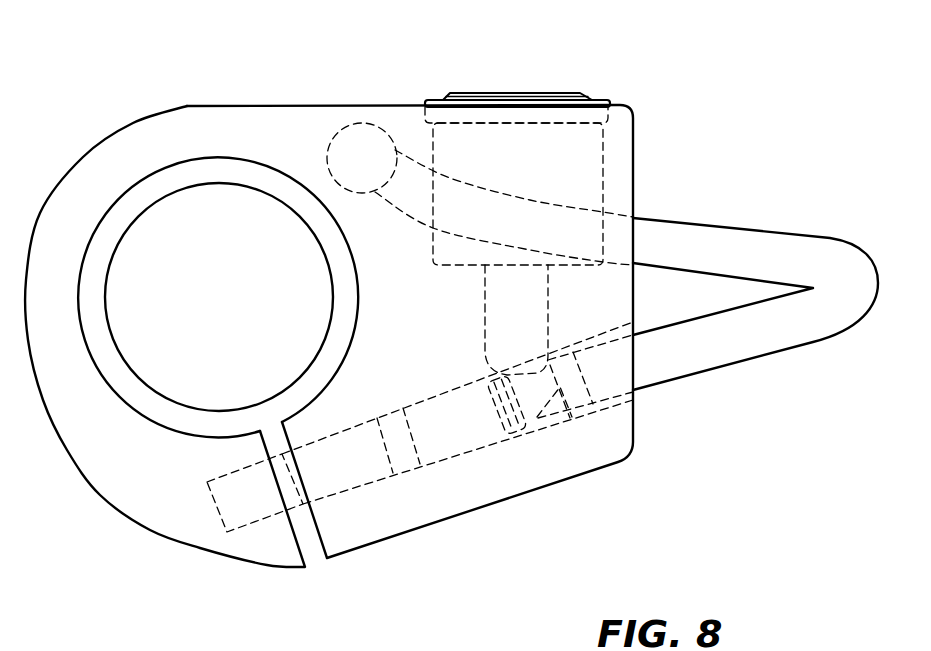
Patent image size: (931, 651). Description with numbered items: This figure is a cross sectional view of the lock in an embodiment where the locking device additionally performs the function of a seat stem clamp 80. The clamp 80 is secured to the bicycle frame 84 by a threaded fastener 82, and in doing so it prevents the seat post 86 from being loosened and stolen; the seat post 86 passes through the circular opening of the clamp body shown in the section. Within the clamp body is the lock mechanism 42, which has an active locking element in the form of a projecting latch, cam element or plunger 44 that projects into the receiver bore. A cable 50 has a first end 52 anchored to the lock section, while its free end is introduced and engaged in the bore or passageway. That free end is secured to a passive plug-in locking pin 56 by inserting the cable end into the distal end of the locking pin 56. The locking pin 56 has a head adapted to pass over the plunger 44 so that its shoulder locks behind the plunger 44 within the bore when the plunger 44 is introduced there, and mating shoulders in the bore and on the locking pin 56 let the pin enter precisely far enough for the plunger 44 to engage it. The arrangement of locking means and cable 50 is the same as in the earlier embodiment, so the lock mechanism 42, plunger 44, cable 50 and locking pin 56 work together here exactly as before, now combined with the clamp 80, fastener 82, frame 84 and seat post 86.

The lock mechanism 42 is at (522, 148).
The plunger 44 is at (504, 318).
The cable 50 is at (797, 255).
The first end 52 is at (360, 150).
The locking pin 56 is at (538, 418).
The seat stem clamp 80 is at (157, 487).
The threaded fastener 82 is at (337, 467).
The bicycle frame 84 is at (98, 340).
The seat post 86 is at (208, 310).